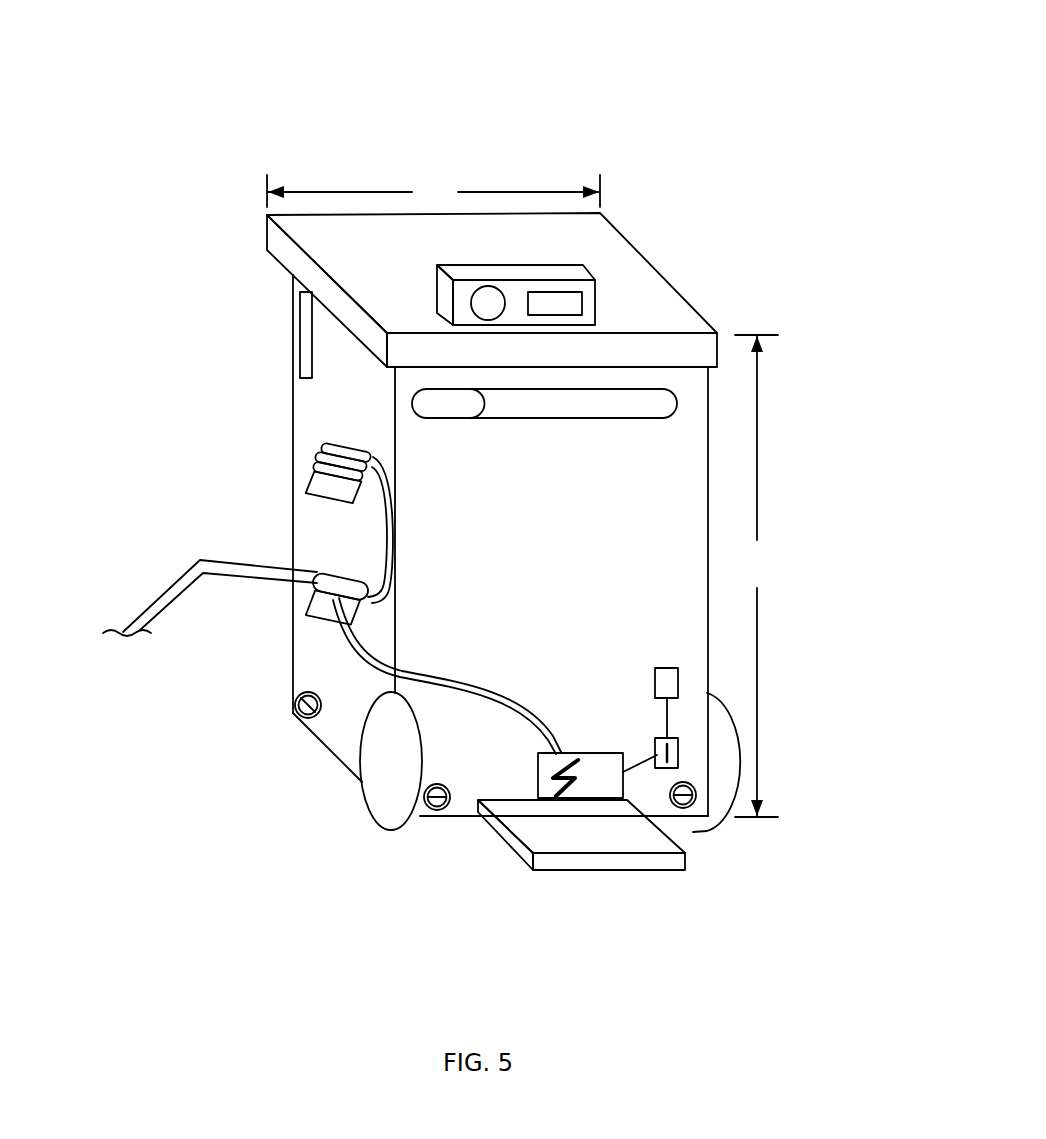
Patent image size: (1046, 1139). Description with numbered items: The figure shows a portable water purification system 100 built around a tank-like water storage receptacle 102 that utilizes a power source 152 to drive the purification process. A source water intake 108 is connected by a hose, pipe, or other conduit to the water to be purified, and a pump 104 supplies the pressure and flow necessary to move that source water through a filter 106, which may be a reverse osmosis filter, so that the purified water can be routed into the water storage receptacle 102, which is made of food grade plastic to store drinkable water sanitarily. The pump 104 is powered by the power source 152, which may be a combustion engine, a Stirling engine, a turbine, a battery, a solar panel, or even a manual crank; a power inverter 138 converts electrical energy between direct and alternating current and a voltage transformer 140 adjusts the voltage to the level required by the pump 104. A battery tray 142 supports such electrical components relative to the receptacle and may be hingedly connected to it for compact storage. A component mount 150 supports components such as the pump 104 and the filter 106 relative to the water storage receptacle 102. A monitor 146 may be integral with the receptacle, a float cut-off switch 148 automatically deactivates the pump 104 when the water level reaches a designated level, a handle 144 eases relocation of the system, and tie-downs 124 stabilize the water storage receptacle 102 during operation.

The portable water purification system 100 is at (627, 83).
The water storage receptacle 102 is at (255, 512).
The pump 104 is at (350, 590).
The filter 106 is at (357, 452).
The source water intake 108 is at (147, 605).
The tie-downs 124 is at (270, 722).
The power inverter 138 is at (682, 753).
The voltage transformer 140 is at (693, 683).
The battery tray 142 is at (600, 877).
The handle 144 is at (682, 407).
The monitor 146 is at (597, 255).
The float cut-off switch 148 is at (263, 331).
The component mount 150 is at (333, 492).
The power source 152 is at (580, 757).